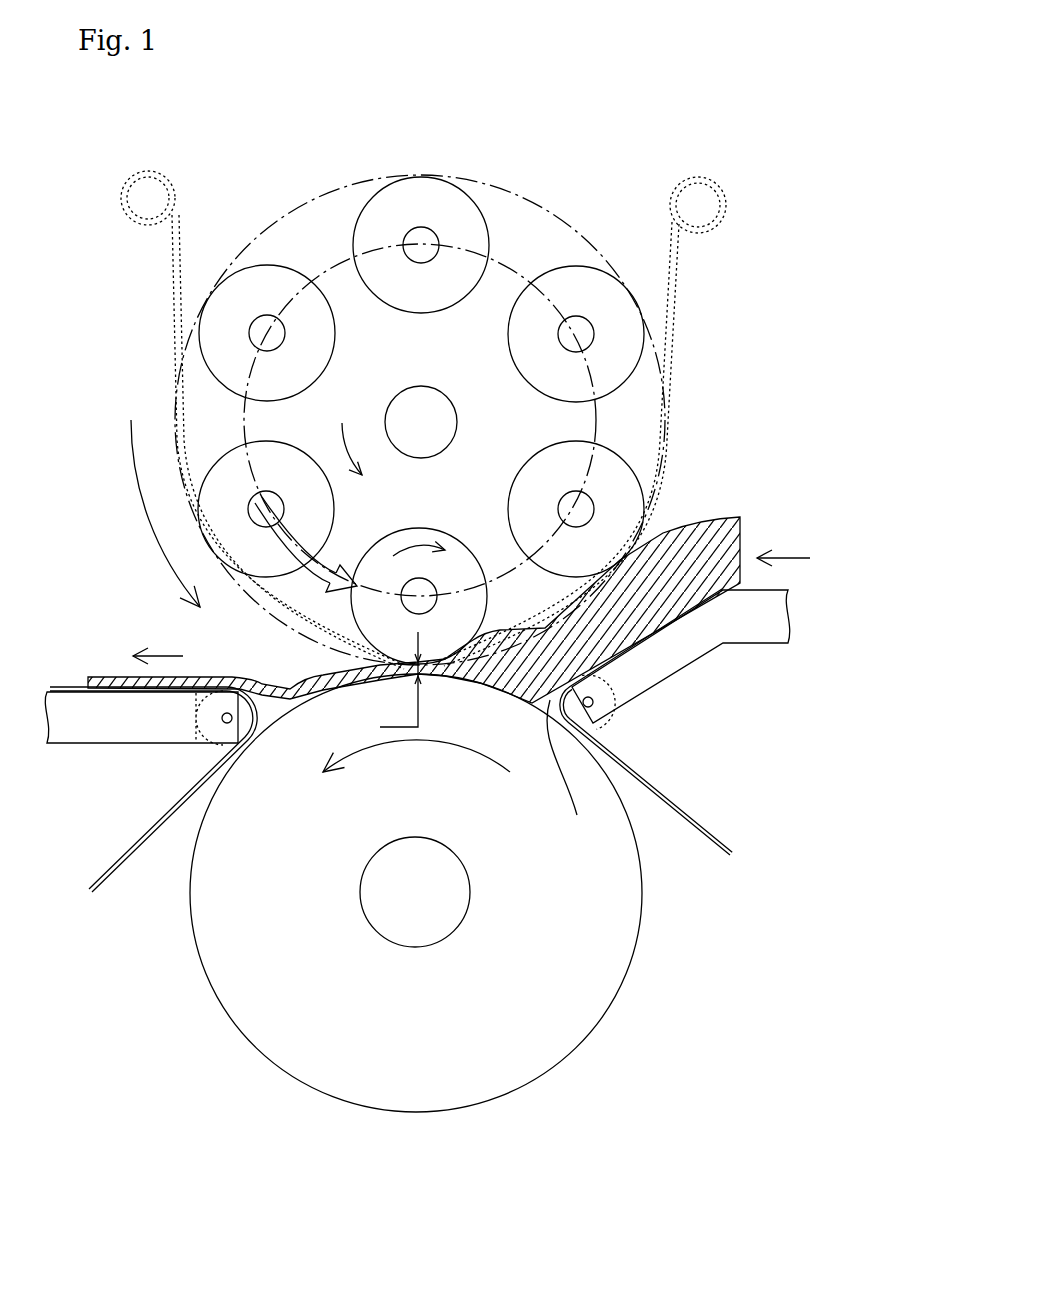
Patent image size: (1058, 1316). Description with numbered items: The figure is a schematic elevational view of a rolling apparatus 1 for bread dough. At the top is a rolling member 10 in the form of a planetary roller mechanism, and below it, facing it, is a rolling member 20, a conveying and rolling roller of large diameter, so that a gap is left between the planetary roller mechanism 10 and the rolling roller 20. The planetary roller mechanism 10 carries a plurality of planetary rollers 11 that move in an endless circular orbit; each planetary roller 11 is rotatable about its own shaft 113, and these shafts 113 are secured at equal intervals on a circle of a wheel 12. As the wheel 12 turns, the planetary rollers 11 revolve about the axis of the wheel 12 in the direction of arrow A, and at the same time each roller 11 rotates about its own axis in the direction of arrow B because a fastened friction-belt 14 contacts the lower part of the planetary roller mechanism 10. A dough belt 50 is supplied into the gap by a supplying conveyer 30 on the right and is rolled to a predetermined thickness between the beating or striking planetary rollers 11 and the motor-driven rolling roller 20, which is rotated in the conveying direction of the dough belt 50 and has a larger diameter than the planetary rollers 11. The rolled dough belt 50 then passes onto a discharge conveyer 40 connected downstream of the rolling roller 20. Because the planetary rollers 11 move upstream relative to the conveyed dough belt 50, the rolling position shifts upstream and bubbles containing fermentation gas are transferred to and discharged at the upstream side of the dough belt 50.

The rolling apparatus 1 is at (583, 220).
The rolling member 10 is at (275, 212).
The planetary roller 11 is at (367, 223).
The wheel 12 is at (233, 417).
The friction-belt 14 is at (673, 282).
The shaft 113 is at (250, 336).
The rolling roller 20 is at (275, 1025).
The supplying conveyer 30 is at (668, 663).
The discharge conveyer 40 is at (123, 722).
The dough belt 50 is at (740, 517).